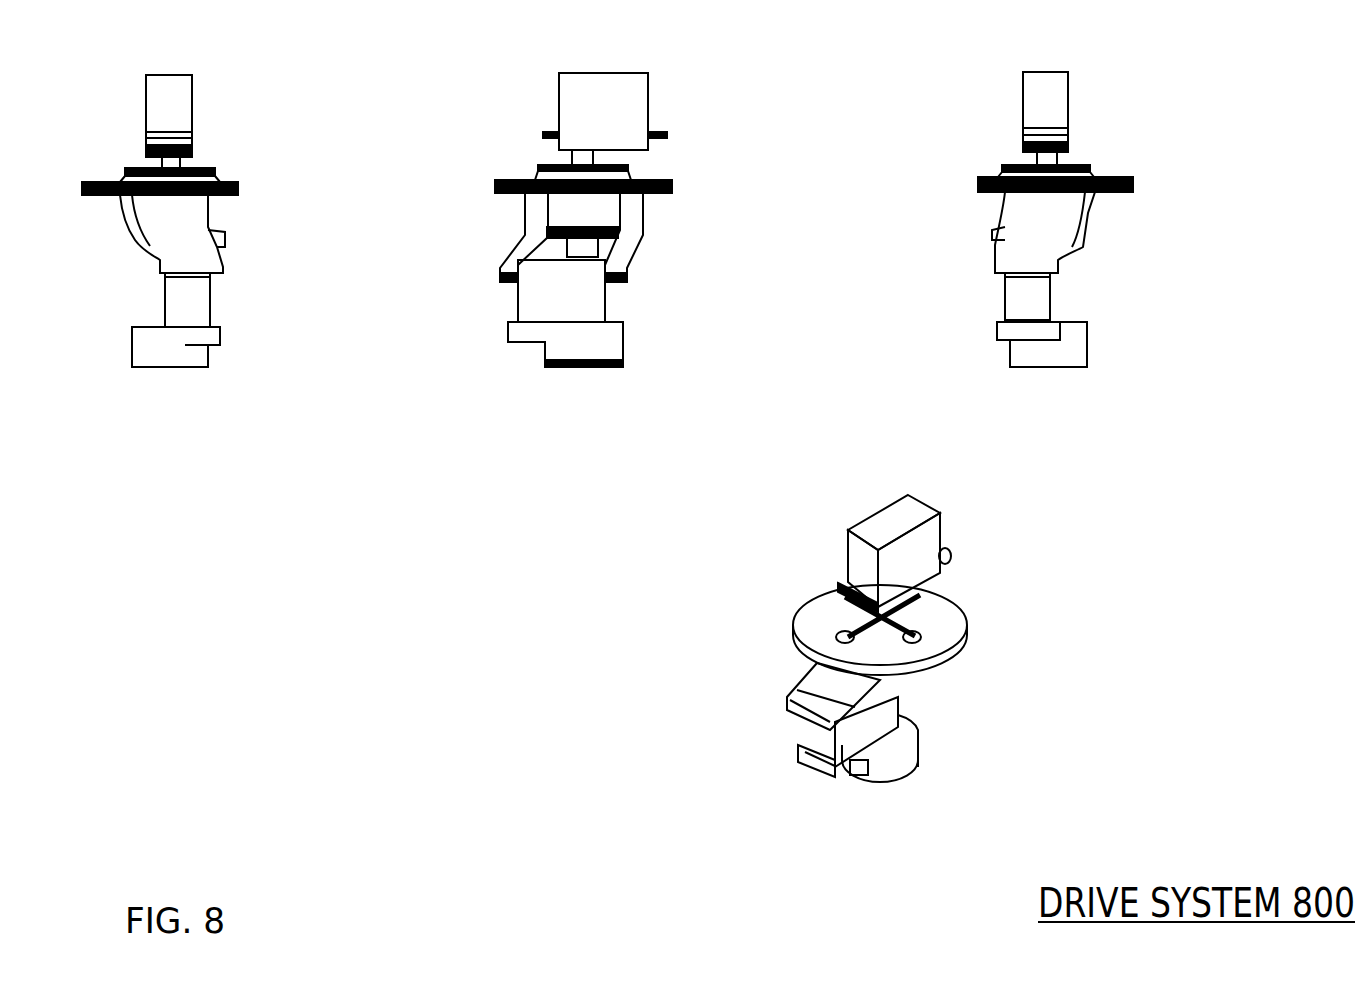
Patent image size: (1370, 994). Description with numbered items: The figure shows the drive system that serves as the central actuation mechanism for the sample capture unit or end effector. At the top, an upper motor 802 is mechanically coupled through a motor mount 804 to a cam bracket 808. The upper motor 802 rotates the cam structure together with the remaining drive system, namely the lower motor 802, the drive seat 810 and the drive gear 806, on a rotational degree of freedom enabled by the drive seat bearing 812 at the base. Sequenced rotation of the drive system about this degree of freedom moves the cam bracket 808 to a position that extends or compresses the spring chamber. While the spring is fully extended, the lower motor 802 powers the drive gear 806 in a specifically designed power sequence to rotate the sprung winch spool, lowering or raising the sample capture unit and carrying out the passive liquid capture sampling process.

The motor 802 is at (655, 88).
The motor mount 804 is at (628, 168).
The drive gear 806 is at (550, 246).
The cam bracket 808 is at (647, 218).
The drive seat 810 is at (625, 337).
The drive seat bearing 812 is at (560, 362).